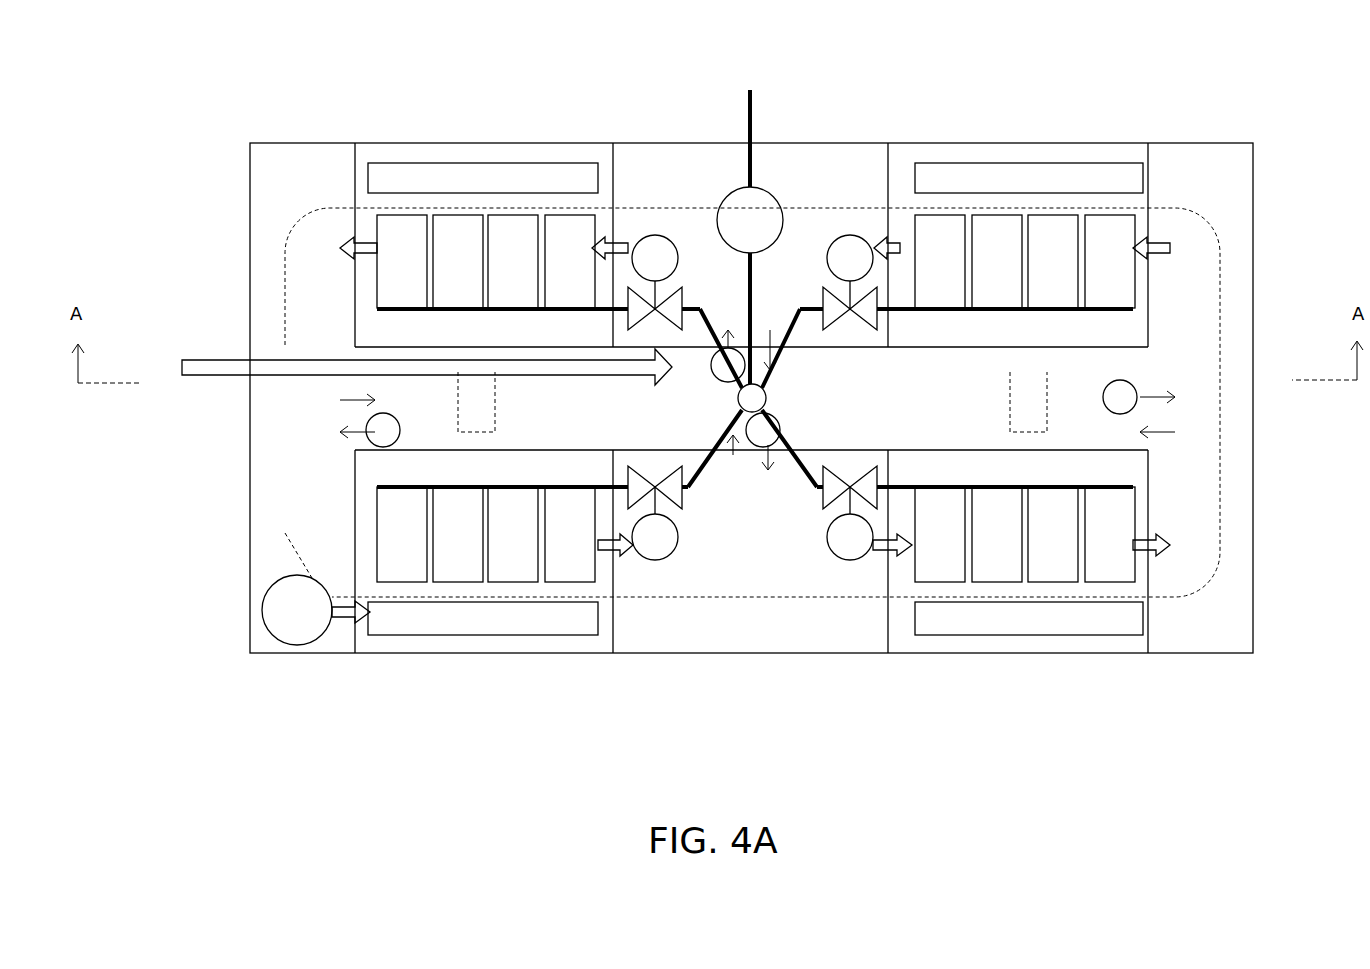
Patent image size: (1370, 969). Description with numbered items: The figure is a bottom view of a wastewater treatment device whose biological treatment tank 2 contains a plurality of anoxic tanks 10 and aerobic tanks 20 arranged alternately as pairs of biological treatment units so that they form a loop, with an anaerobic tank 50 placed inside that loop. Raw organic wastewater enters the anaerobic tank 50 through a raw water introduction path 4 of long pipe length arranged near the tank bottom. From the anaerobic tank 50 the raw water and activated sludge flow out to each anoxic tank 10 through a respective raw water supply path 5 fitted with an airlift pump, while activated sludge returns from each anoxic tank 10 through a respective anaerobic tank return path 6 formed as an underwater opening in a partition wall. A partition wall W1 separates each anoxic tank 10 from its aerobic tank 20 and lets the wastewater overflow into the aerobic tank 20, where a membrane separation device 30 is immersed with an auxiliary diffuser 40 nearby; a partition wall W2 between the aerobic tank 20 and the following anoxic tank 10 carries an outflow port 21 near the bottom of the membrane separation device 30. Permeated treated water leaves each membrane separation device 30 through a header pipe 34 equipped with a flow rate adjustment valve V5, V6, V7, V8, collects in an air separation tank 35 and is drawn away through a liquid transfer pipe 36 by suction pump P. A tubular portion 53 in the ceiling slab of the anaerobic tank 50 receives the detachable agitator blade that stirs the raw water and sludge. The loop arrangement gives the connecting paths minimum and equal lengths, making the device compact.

The biological treatment tank 2 is at (1186, 140).
The raw water introduction path 4 is at (213, 384).
The raw water supply path 5 is at (729, 325).
The anaerobic tank return path 6 is at (771, 328).
The anoxic tank 10 is at (747, 398).
The aerobic tank 20 is at (485, 143).
The outflow port 21 is at (345, 225).
The membrane separation device 30 is at (570, 228).
The header pipe 34 is at (582, 312).
The air separation tank 35 is at (770, 395).
The liquid transfer pipe 36 is at (753, 90).
The auxiliary diffuser 40 is at (556, 188).
The anaerobic tank 50 is at (863, 417).
The tubular portion 53 is at (502, 410).
The valve V5 is at (648, 560).
The valve V6 is at (852, 560).
The valve V7 is at (850, 234).
The valve V8 is at (655, 234).
The partition wall W1 is at (1150, 314).
The partition wall W2 is at (356, 303).